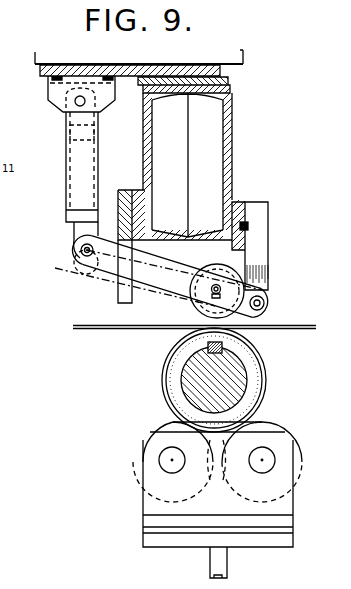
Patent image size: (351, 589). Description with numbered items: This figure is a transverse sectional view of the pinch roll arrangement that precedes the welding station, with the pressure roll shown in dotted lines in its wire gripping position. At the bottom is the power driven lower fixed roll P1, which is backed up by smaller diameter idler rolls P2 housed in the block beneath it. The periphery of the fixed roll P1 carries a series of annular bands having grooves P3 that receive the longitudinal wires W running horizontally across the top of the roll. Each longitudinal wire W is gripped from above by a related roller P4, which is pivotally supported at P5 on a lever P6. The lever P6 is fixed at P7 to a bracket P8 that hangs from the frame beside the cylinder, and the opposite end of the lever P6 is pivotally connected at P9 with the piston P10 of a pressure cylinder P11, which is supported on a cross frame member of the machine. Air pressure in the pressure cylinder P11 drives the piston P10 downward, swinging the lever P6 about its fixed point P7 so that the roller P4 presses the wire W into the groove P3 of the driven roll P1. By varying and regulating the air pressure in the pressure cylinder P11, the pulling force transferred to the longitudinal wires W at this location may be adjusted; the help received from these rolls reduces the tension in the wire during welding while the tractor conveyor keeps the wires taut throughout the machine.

The lower fixed roll P1 is at (207, 381).
The idler rolls P2 is at (217, 500).
The grooves P3 is at (256, 348).
The roller P4 is at (193, 314).
The pivot P5 is at (215, 284).
The lever P6 is at (161, 276).
The pivot P7 is at (265, 289).
The bracket P8 is at (258, 212).
The pivot P9 is at (78, 255).
The piston P10 is at (82, 229).
The pressure cylinder P11 is at (82, 155).
The longitudinal wires W is at (100, 325).